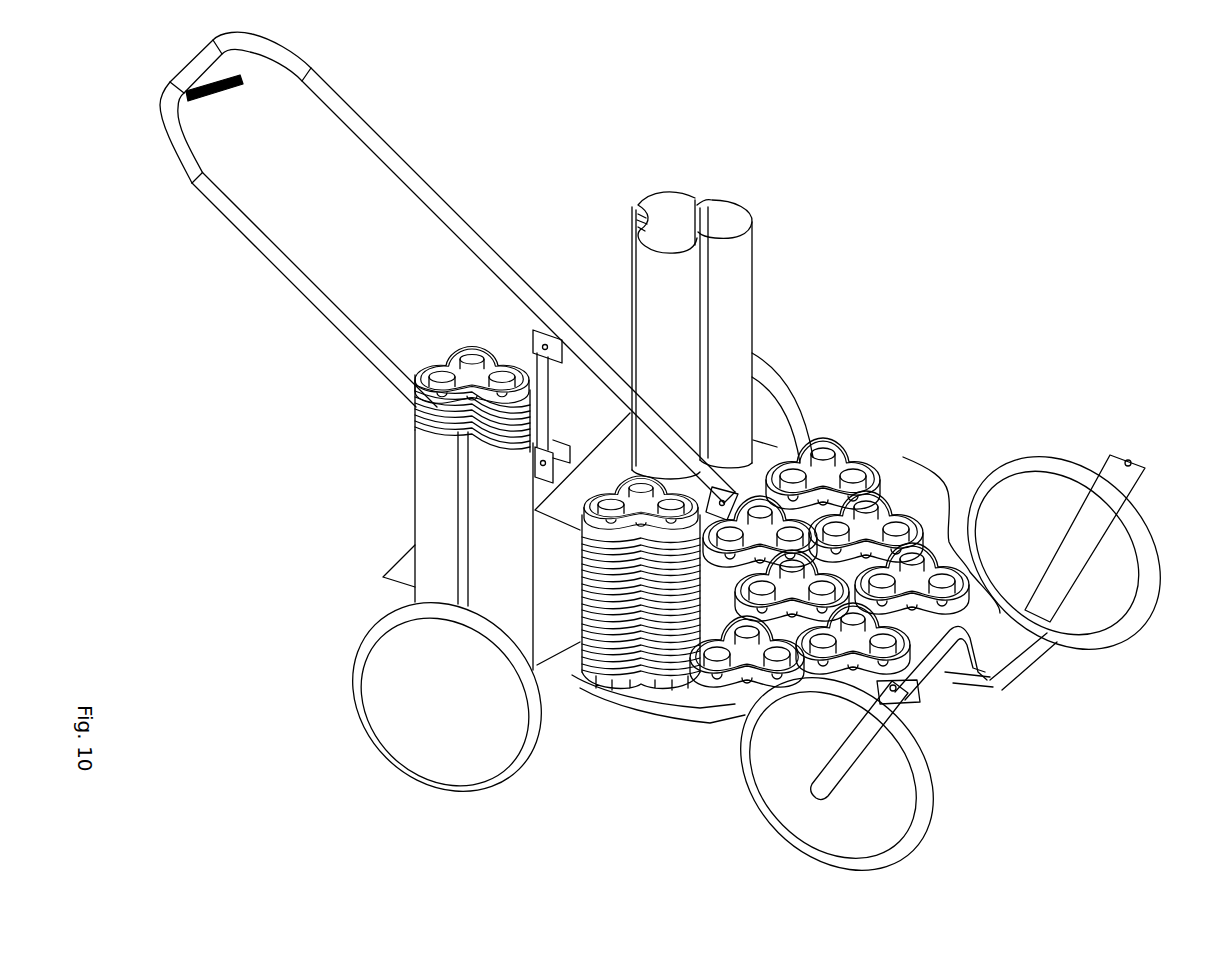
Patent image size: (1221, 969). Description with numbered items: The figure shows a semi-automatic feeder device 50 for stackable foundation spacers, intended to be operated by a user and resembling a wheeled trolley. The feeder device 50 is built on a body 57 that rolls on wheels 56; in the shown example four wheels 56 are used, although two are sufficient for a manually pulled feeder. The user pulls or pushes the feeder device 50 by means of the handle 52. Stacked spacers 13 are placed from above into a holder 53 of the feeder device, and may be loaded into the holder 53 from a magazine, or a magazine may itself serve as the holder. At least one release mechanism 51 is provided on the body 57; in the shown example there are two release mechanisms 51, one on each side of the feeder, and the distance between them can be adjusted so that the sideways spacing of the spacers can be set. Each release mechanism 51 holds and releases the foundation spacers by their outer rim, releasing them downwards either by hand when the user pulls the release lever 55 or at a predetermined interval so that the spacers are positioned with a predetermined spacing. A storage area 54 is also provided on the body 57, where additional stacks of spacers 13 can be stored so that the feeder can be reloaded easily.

The stacked spacers 13 is at (412, 413).
The feeder device 50 is at (912, 428).
The release mechanism 51 is at (773, 437).
The handle 52 is at (412, 170).
The holder 53 is at (732, 278).
The storage area 54 is at (922, 517).
The release lever 55 is at (219, 97).
The wheels 56 is at (392, 728).
The body 57 is at (668, 737).